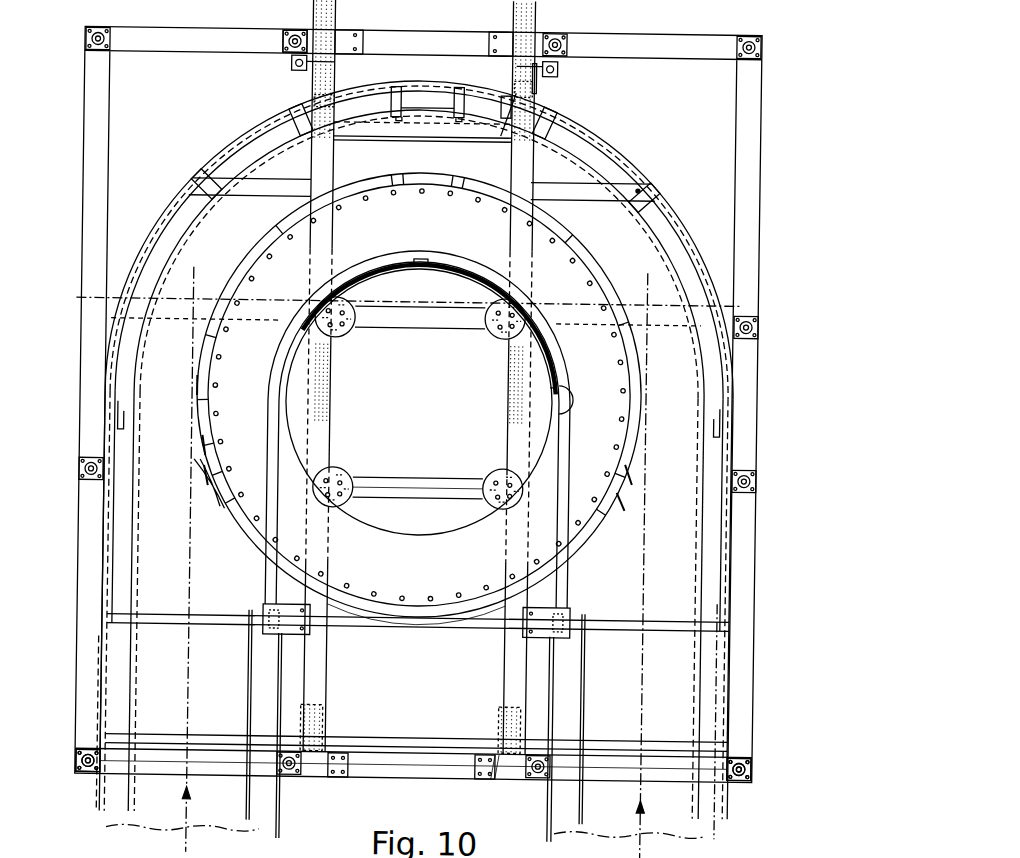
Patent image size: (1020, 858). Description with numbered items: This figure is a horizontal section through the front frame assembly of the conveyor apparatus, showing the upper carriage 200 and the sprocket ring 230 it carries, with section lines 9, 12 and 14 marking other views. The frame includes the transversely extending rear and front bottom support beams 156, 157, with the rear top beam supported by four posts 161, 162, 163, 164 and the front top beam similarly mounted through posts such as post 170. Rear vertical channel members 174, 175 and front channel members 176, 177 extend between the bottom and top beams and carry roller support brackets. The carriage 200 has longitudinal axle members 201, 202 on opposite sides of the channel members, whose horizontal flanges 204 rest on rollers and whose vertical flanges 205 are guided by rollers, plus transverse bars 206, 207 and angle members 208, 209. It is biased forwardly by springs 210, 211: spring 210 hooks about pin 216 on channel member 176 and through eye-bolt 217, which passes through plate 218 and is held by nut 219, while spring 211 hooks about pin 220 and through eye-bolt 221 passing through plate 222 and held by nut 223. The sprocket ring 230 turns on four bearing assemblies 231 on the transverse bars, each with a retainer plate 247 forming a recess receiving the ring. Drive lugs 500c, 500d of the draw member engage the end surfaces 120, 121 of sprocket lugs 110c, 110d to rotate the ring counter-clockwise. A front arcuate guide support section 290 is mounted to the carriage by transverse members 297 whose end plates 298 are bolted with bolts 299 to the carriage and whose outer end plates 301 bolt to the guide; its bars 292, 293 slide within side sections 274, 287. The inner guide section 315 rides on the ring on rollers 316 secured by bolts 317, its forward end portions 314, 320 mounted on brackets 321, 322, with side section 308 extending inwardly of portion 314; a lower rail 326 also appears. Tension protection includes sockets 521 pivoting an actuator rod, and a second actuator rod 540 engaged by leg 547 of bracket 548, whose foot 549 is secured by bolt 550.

The rear bottom support beam 156 is at (436, 775).
The front bottom support beam 157 is at (415, 38).
The post 161 is at (92, 766).
The post 162 is at (293, 770).
The post 163 is at (550, 775).
The post 164 is at (757, 765).
The post 170 is at (758, 44).
The rear vertical channel member 174 is at (335, 779).
The rear vertical channel member 175 is at (502, 775).
The front channel member 176 is at (346, 42).
The front channel member 177 is at (482, 37).
The upper carriage 200 is at (362, 624).
The longitudinal axle member 201 is at (328, 158).
The longitudinal axle member 202 is at (505, 160).
The horizontal flange 204 is at (333, 685).
The vertical flange 205 is at (507, 679).
The transverse bar 206 is at (422, 330).
The transverse bar 207 is at (423, 461).
The angle member 208 is at (418, 134).
The angle member 209 is at (493, 622).
The spring 210 is at (333, 360).
The spring 211 is at (507, 359).
The pin 216 is at (311, 102).
The eye-bolt 217 is at (334, 382).
The plate 218 is at (332, 404).
The nut 219 is at (338, 418).
The pin 220 is at (527, 86).
The eye-bolt 221 is at (506, 381).
The plate 222 is at (507, 395).
The nut 223 is at (508, 410).
The sprocket ring 230 is at (233, 480).
The bearing assembly 231 is at (352, 297).
The retainer plate 247 is at (352, 470).
The side section 274 is at (737, 689).
The side section 287 is at (102, 660).
The front arcuate guide support section 290 is at (598, 140).
The rearwardly extending bar 292 is at (742, 438).
The rearwardly extending bar 293 is at (110, 428).
The transverse member 297 is at (255, 196).
The vertical end plate 298 is at (533, 190).
The bolt 299 is at (531, 182).
The outer end plate 301 is at (644, 194).
The side section 308 is at (561, 690).
The forward end portion 314 is at (568, 593).
The arcuate inner forward end guide support section 315 is at (431, 254).
The roller 316 is at (275, 407).
The bolt 317 is at (277, 385).
The forward end portion 320 is at (270, 589).
The bracket 321 is at (566, 640).
The bracket 322 is at (286, 640).
The lower rail 326 is at (282, 810).
The drive lug 500c is at (200, 481).
The drive lug 500d is at (204, 392).
The sprocket lug 110c is at (220, 507).
The sprocket lug 110d is at (201, 455).
The end surface 120 is at (637, 484).
The end surface 121 is at (633, 472).
The socket 521 is at (288, 67).
The second actuator rod 540 is at (553, 65).
The vertical leg 547 is at (507, 85).
The bracket 548 is at (535, 76).
The foot 549 is at (496, 118).
The bolt 550 is at (501, 86).
The section line 9- 9 is at (38, 769).
The section line 12- 12 is at (40, 374).
The section line 14- 14 is at (452, 509).